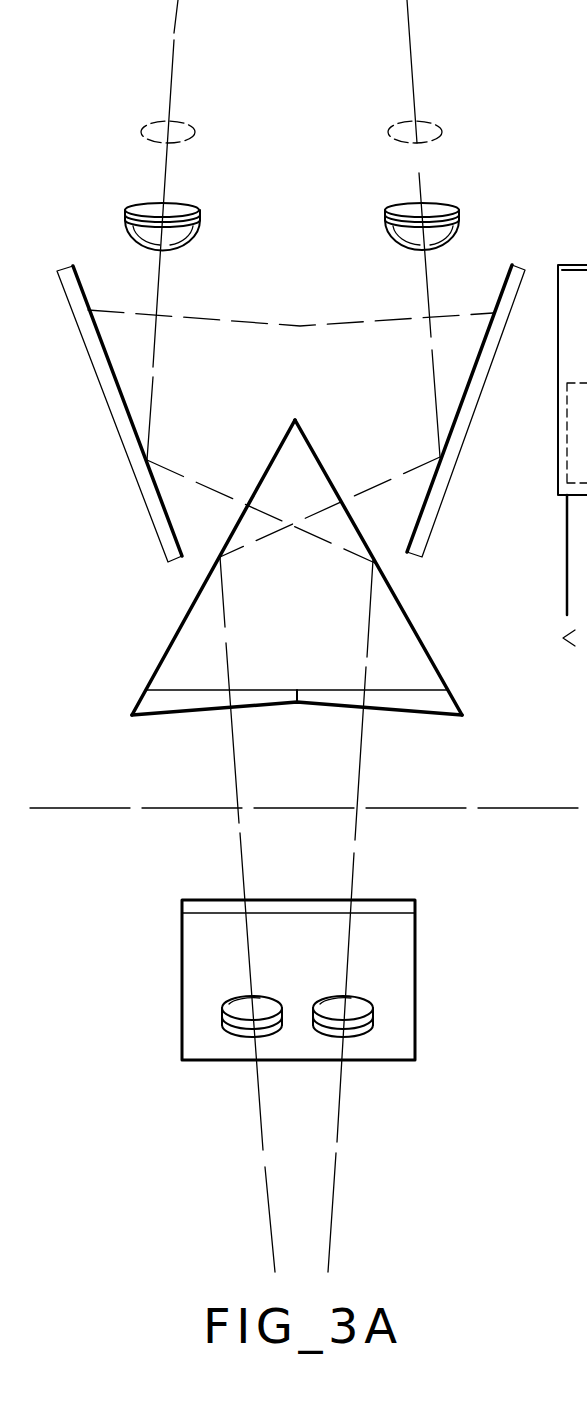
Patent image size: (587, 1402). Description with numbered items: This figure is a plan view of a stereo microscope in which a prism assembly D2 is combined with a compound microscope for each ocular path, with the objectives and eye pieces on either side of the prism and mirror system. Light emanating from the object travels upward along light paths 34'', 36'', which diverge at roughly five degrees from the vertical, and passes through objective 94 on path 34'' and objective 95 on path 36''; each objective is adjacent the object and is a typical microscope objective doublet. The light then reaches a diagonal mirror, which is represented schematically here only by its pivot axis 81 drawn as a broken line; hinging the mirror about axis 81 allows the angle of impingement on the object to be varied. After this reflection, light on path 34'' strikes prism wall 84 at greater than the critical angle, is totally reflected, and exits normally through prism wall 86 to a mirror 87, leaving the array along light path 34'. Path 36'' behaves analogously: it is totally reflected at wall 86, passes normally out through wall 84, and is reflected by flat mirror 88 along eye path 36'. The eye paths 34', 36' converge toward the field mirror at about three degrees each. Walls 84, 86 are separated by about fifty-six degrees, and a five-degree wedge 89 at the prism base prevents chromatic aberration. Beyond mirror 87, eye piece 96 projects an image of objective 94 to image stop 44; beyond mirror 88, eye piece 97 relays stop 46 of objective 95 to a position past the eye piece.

The image stop 44 is at (437, 122).
The stop 46 is at (148, 122).
The eye piece 96 is at (445, 205).
The eye piece 97 is at (135, 205).
The light path 34' is at (358, 278).
The eye path 36' is at (234, 281).
The mirror 87 is at (480, 405).
The flat mirror 88 is at (112, 425).
The prism assembly D2 is at (265, 599).
The prism wall 84 is at (187, 610).
The prism wall 86 is at (353, 522).
The wedge 89 is at (187, 715).
The pivot axis 81 is at (152, 810).
The light path 34'' is at (231, 914).
The light path 36'' is at (377, 916).
The objective 94 is at (223, 1010).
The objective 95 is at (372, 1007).